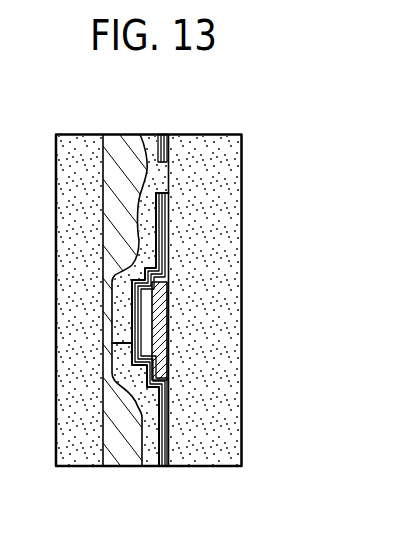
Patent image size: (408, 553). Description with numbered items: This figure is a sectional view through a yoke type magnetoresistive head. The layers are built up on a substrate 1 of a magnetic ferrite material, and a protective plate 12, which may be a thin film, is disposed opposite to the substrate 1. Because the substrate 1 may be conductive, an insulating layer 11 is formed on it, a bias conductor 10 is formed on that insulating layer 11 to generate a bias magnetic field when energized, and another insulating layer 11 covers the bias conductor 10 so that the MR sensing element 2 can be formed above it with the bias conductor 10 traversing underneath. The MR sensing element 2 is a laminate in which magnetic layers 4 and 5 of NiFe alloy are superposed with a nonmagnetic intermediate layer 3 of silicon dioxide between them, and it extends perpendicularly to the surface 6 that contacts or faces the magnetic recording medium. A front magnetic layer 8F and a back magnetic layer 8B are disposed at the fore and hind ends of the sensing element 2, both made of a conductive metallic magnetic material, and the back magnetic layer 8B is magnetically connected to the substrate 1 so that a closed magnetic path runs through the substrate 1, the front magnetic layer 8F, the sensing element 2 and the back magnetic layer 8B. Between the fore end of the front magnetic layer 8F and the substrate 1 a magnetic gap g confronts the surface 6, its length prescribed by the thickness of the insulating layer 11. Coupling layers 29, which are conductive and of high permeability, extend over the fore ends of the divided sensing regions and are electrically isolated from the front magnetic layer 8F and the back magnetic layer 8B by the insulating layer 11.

The substrate 1 is at (227, 248).
The MR sensing element 2 is at (218, 329).
The nonmagnetic intermediate layer 3 is at (137, 308).
The magnetic layer 4 is at (137, 316).
The magnetic layer 5 is at (137, 299).
The surface 6 is at (148, 470).
The magnetic gap g is at (166, 470).
The back magnetic layer 8B is at (147, 208).
The front magnetic layer 8F is at (152, 425).
The bias conductor 10 is at (166, 344).
The insulating layer 11 is at (164, 241).
The protective plate 12 is at (87, 134).
The coupling layer 29 is at (140, 291).